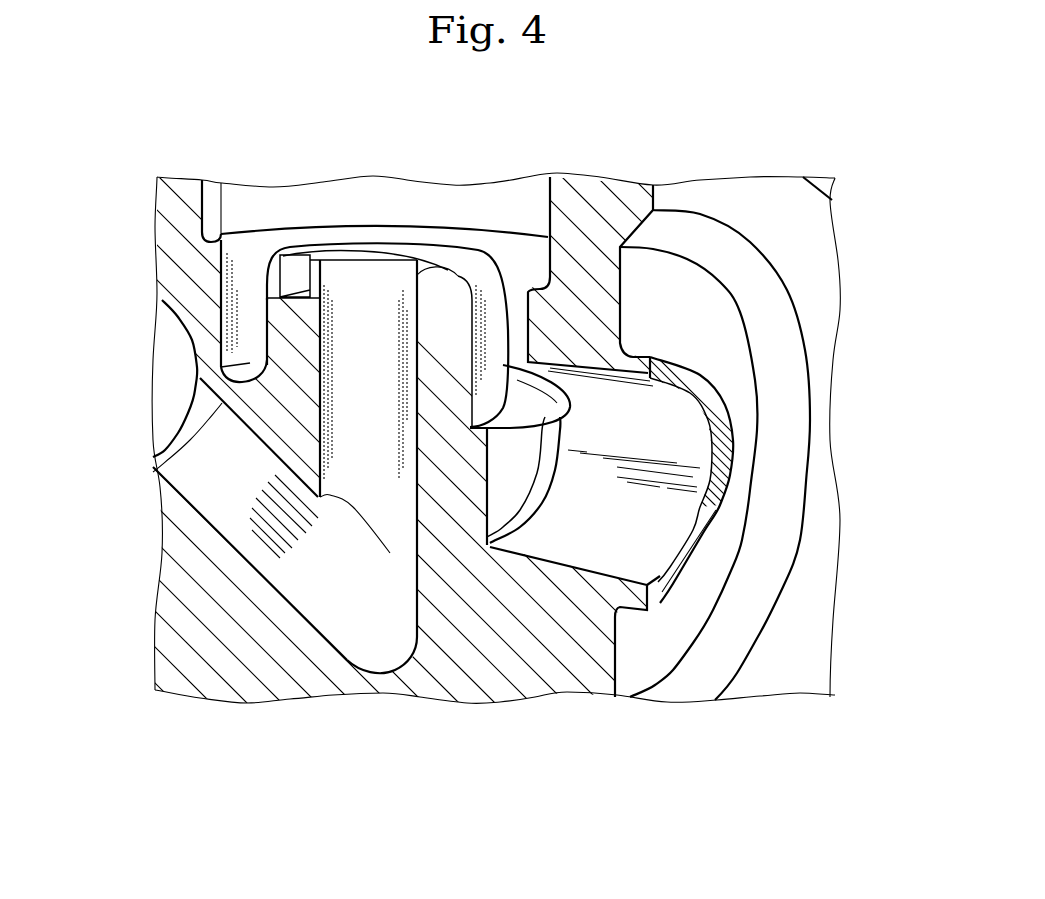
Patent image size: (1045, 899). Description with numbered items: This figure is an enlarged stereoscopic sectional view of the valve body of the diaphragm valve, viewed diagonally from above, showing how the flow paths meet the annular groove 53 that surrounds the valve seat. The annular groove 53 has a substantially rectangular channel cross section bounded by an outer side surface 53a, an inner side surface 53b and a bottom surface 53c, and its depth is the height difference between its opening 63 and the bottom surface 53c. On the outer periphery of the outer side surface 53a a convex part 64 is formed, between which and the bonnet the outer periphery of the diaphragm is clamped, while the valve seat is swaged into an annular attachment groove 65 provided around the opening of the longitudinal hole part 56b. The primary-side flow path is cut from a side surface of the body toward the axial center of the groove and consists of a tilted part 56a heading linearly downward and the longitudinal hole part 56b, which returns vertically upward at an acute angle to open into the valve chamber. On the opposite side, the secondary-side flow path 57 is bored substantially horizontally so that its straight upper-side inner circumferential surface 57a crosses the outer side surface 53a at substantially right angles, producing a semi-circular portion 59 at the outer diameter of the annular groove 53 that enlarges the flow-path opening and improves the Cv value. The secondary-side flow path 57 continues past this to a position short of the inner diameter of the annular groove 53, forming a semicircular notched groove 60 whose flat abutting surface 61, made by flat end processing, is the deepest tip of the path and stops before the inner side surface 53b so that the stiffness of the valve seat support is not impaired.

The annular groove 53 is at (240, 280).
The outer side surface 53a is at (263, 337).
The inner side surface 53b is at (237, 333).
The bottom surface 53c is at (240, 360).
The tilted part 56a is at (237, 498).
The longitudinal hole part 56b is at (370, 450).
The secondary-side flow path 57 is at (667, 537).
The upper-side inner circumferential surface 57a is at (668, 405).
The semi-circular portion 59 is at (531, 360).
The semicircular notched groove 60 is at (532, 510).
The abutting surface 61 is at (498, 492).
The opening 63 is at (387, 252).
The convex part 64 is at (218, 205).
The annular attachment groove 65 is at (305, 283).